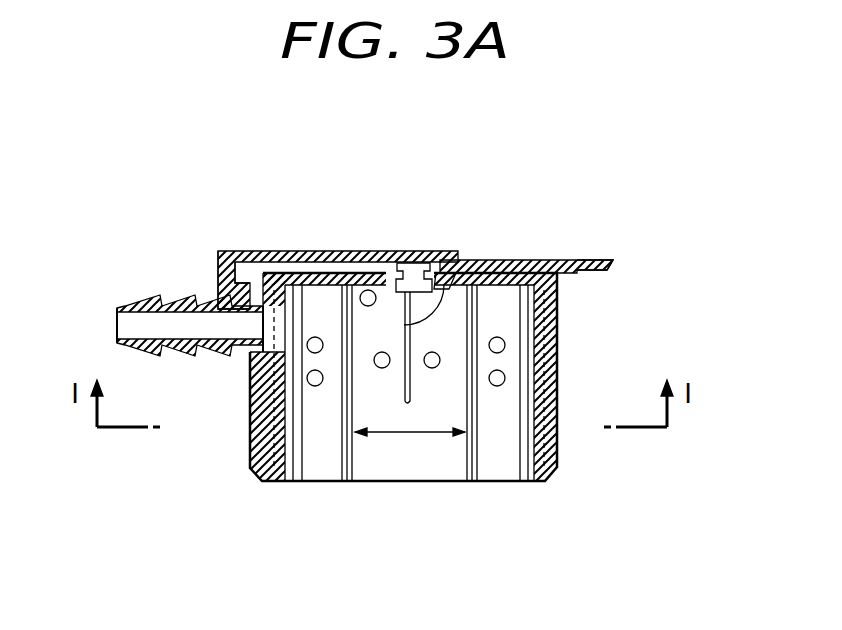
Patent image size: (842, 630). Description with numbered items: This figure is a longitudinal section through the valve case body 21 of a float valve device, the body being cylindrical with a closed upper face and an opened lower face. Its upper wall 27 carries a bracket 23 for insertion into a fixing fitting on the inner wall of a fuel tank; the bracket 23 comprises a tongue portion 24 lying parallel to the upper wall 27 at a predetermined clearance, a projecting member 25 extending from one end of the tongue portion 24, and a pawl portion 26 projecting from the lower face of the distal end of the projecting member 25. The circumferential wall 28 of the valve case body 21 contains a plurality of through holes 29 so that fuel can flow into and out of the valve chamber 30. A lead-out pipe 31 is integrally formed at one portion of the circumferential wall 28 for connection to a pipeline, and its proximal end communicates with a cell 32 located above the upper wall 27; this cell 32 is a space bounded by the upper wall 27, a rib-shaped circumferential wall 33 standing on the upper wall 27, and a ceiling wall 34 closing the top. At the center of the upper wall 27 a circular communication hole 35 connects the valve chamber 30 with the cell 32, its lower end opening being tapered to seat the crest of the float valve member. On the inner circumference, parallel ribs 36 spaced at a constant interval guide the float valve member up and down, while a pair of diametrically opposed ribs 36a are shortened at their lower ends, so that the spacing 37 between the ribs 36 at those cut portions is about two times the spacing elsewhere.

The valve case body 21 is at (406, 357).
The bracket 23 is at (565, 211).
The tongue portion 24 is at (500, 260).
The projecting member 25 is at (587, 259).
The pawl portion 26 is at (609, 268).
The upper wall 27 is at (297, 278).
The circumferential wall 28 is at (322, 470).
The through holes 29 is at (505, 377).
The valve chamber 30 is at (443, 468).
The lead-out pipe 31 is at (152, 303).
The cell 32 is at (268, 262).
The circumferential wall 33 is at (220, 275).
The ceiling wall 34 is at (357, 251).
The communication hole 35 is at (395, 263).
The ribs 36 is at (353, 454).
The diametrically opposed ribs 36a is at (436, 262).
The spacing 37 is at (410, 447).